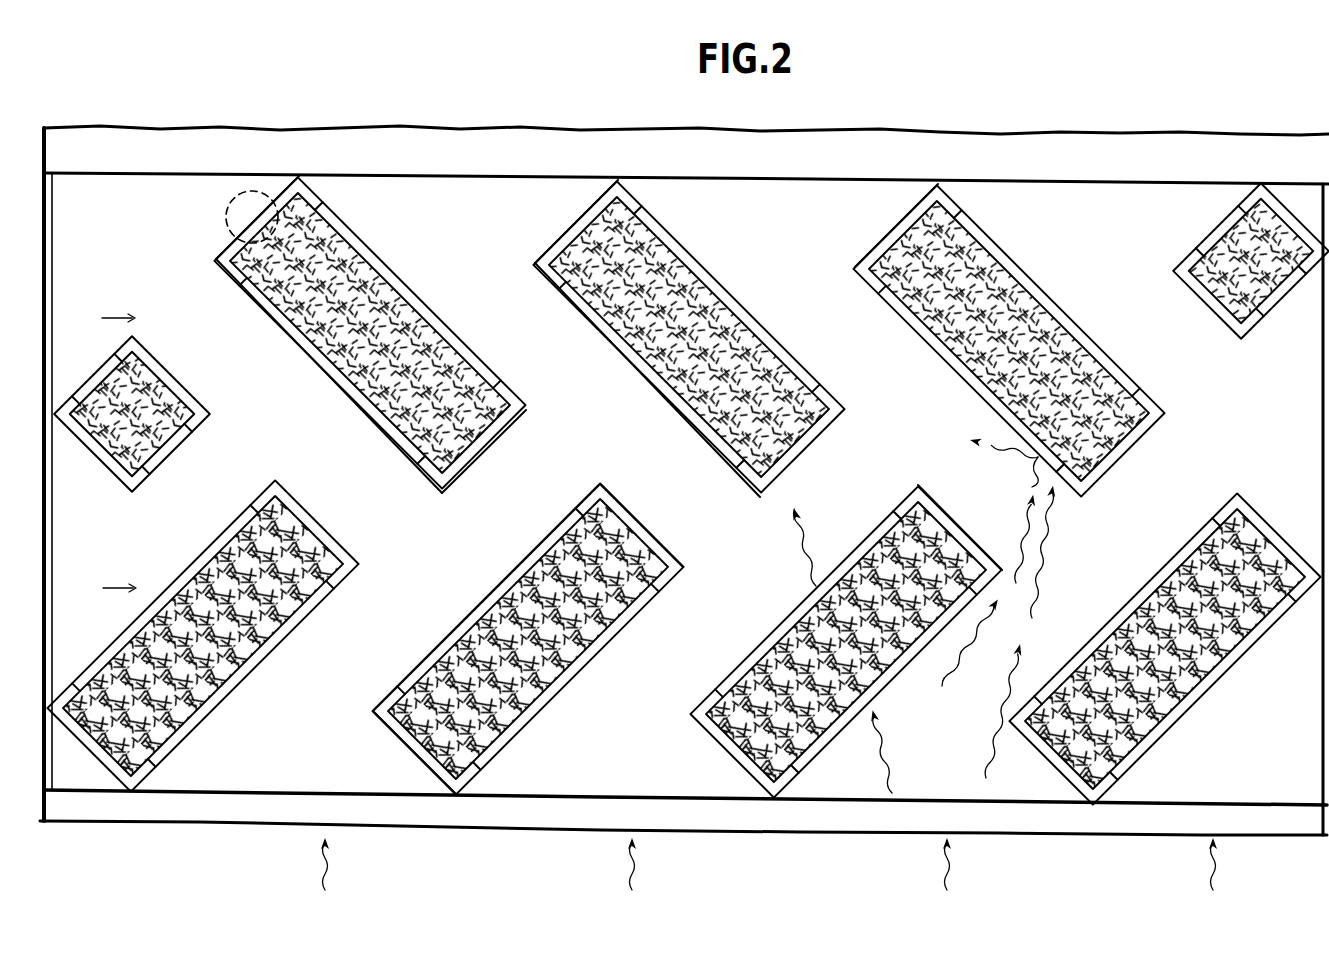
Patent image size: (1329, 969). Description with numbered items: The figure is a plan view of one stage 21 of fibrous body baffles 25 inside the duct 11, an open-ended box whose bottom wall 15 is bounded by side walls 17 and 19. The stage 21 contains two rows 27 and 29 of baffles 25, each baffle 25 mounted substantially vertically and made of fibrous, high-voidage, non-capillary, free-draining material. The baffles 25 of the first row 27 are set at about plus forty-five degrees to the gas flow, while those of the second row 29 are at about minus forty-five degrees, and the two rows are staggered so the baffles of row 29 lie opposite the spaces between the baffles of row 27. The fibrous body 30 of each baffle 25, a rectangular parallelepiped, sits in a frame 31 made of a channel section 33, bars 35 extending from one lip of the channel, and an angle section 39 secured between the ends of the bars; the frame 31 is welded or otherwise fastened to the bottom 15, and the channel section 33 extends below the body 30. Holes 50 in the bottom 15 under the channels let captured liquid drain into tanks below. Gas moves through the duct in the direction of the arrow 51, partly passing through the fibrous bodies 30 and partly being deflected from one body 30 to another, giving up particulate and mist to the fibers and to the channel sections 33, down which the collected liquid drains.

The duct 11 is at (744, 123).
The bottom wall 15 is at (603, 778).
The side wall 17 is at (1325, 432).
The side wall 19 is at (50, 541).
The stage 21 is at (864, 190).
The fibrous body baffle 25 is at (309, 403).
The first row 27 is at (104, 587).
The second row 29 is at (105, 317).
The fibrous body 30 is at (373, 411).
The frame 31 is at (372, 252).
The channel section 33 is at (579, 224).
The bar 35 is at (497, 591).
The angle section 39 is at (517, 405).
The holes 50 is at (249, 215).
The arrow 51 is at (981, 758).